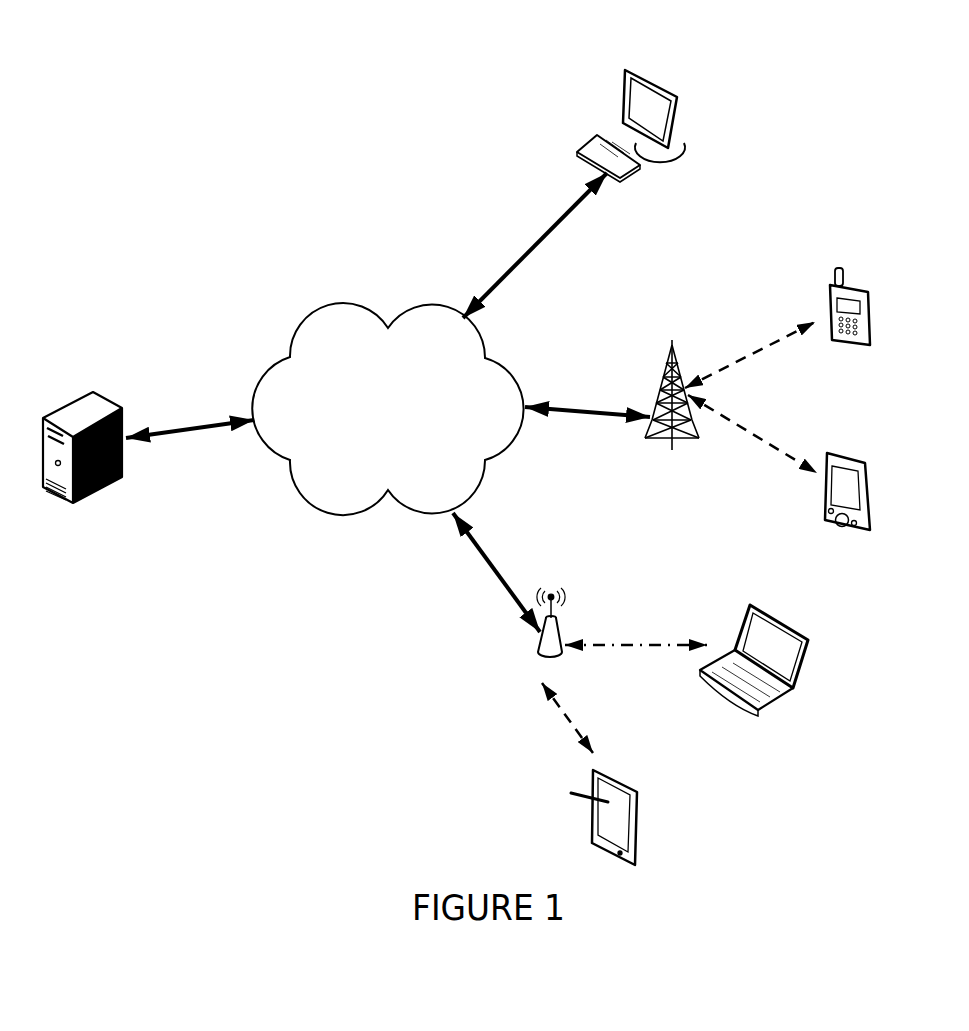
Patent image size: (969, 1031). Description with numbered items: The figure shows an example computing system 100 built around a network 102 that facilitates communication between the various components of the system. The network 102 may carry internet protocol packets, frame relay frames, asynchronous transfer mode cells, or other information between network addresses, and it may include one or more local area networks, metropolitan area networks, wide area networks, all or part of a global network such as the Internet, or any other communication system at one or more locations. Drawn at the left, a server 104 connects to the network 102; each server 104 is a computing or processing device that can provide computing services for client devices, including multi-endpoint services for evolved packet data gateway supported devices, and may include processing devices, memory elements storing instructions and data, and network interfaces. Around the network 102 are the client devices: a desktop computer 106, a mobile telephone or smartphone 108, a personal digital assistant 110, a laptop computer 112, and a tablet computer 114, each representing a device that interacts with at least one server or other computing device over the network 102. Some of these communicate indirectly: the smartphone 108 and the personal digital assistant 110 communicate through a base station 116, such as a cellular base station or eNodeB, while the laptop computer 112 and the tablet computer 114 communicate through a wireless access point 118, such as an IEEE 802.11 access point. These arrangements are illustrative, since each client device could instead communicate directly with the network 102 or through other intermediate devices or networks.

The computing system 100 is at (212, 166).
The network 102 is at (301, 319).
The server 104 is at (57, 413).
The desktop computer 106 is at (623, 72).
The mobile telephone or smartphone 108 is at (868, 292).
The personal digital assistant (PDA) 110 is at (867, 463).
The laptop computer 112 is at (810, 648).
The tablet computer 114 is at (642, 810).
The base station 116 is at (696, 437).
The wireless access point 118 is at (563, 630).